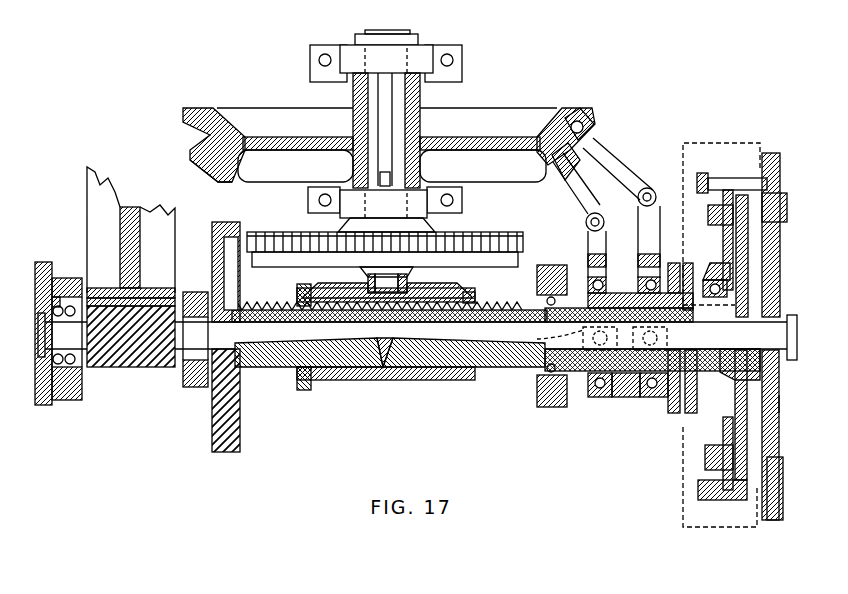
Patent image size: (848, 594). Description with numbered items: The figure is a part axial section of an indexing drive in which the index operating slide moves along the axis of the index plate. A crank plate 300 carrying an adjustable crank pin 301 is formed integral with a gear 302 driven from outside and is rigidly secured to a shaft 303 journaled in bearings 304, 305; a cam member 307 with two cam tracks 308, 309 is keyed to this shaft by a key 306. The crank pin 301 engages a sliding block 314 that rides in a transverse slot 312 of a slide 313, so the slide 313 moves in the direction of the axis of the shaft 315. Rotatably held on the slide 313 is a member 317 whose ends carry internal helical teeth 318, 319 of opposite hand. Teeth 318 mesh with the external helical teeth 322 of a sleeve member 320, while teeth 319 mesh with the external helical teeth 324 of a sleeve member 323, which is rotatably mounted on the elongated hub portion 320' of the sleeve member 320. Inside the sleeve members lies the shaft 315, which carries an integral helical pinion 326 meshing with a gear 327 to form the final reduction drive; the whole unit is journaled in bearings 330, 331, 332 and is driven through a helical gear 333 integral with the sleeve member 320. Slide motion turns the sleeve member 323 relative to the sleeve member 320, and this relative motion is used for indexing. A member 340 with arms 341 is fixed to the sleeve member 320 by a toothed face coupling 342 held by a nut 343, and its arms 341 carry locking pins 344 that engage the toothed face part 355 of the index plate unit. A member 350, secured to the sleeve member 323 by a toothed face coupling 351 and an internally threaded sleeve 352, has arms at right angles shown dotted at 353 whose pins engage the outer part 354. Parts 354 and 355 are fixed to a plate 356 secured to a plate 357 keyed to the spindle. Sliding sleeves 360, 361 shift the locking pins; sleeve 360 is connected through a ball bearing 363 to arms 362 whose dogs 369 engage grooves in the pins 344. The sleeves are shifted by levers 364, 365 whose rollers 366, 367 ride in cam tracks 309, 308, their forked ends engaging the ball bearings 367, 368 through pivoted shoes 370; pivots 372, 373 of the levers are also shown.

The crank plate 300 is at (272, 250).
The adjustable crank pin 301 is at (383, 281).
The gear 302 is at (303, 250).
The shaft 303 is at (371, 97).
The bearing 304 is at (350, 55).
The bearing 305 is at (418, 198).
The key 306 is at (387, 104).
The cam member 307 is at (507, 133).
The cam track 308 is at (228, 166).
The cam track 309 is at (204, 136).
The transverse slot 312 is at (412, 285).
The slide 313 is at (323, 388).
The sliding block 314 is at (330, 262).
The shaft 315 is at (420, 360).
The member 317 is at (335, 382).
The internal helical teeth 318 is at (300, 303).
The internal helical teeth 319 is at (470, 310).
The sleeve member 320 is at (309, 355).
The elongated hub portion 320' is at (454, 397).
The external helical teeth 322 is at (302, 357).
The sleeve member 323 is at (490, 333).
The external helical teeth 324 is at (428, 375).
The helical pinion 326 is at (143, 342).
The gear 327 is at (120, 286).
The bearing 330 is at (57, 392).
The bearing 331 is at (187, 360).
The bearing 332 is at (548, 404).
The helical gear 333 is at (217, 433).
The member 340 is at (718, 400).
The arms 341 is at (715, 435).
The toothed face coupling 342 is at (700, 362).
The nut 343 is at (692, 411).
The locking pins 344 is at (745, 185).
The member 350 is at (688, 262).
The toothed face coupling 351 is at (594, 380).
The internally threaded sleeve 352 is at (596, 394).
The arms of member 353 is at (683, 152).
The outer part 354 is at (770, 500).
The toothed face part 355 is at (782, 492).
The plate 356 is at (783, 195).
The plate 357 is at (779, 404).
The sliding sleeve 360 is at (622, 398).
The sliding sleeve 361 is at (668, 402).
The arms 362 is at (708, 468).
The ball bearing 363 is at (712, 282).
The lever 364 is at (596, 252).
The lever 365 is at (615, 166).
The roller 366 is at (583, 130).
The roller 367 is at (556, 162).
The ball bearing 368 is at (636, 257).
The dogs 369 is at (722, 491).
The pivoted shoes 370 is at (505, 352).
The pivot ring 372 is at (586, 216).
The pivot ring 373 is at (648, 188).